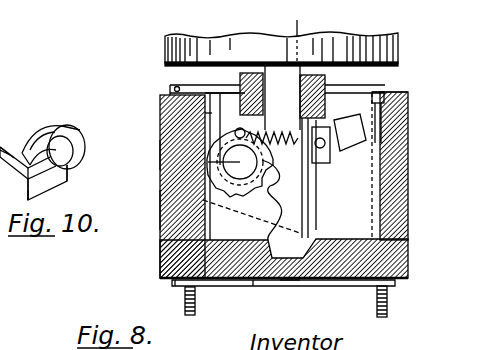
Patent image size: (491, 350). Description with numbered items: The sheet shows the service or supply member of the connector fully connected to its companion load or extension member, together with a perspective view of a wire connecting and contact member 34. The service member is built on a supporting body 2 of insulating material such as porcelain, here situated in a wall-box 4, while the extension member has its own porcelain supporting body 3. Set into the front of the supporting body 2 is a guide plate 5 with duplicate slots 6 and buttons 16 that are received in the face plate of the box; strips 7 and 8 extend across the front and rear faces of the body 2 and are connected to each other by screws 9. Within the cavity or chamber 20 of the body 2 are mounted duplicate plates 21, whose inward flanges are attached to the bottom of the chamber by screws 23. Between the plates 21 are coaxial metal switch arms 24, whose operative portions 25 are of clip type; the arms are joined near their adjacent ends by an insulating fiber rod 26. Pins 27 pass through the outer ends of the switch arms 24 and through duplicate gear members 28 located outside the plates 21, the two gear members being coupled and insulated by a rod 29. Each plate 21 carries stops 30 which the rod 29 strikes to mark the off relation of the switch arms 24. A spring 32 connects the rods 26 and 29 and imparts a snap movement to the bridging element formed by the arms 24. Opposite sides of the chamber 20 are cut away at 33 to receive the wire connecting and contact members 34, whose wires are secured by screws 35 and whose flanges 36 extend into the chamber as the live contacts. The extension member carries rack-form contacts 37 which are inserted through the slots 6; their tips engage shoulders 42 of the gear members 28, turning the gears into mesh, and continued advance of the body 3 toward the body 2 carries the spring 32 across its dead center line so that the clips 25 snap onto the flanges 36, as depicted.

In FIG. 8, the supporting body 2 is at (163, 205).
In FIG. 8, the supporting body 3 is at (352, 34).
In FIG. 10, the wall-box 4 is at (7, 143).
In FIG. 8, the guide plate 5 is at (327, 101).
In FIG. 10, the slots 6 is at (14, 203).
In FIG. 8, the strip 7 is at (293, 286).
In FIG. 8, the strip 8 is at (240, 90).
In FIG. 8, the screws 9 is at (197, 302).
In FIG. 8, the buttons 16 is at (255, 72).
In FIG. 8, the cavity or chamber 20 is at (410, 195).
In FIG. 10, the plates 21 is at (9, 122).
In FIG. 8, the plates 21 is at (162, 250).
In FIG. 8, the screws 23 is at (182, 288).
In FIG. 8, the switch arms 24 is at (264, 195).
In FIG. 8, the operative portions 25 is at (357, 152).
In FIG. 8, the rod 26 is at (323, 195).
In FIG. 8, the pins 27 is at (163, 148).
In FIG. 8, the gear members 28 is at (163, 113).
In FIG. 8, the rod 29 is at (162, 98).
In FIG. 8, the stops 30 is at (162, 235).
In FIG. 8, the spring 32 is at (297, 115).
In FIG. 8, the cut away portions 33 is at (410, 101).
In FIG. 10, the wire connecting and contact members 34 is at (80, 163).
In FIG. 10, the screws 35 is at (43, 140).
In FIG. 8, the flanges 36 is at (427, 90).
In FIG. 8, the contacts 37 is at (271, 287).
In FIG. 8, the shoulders 42 is at (282, 67).